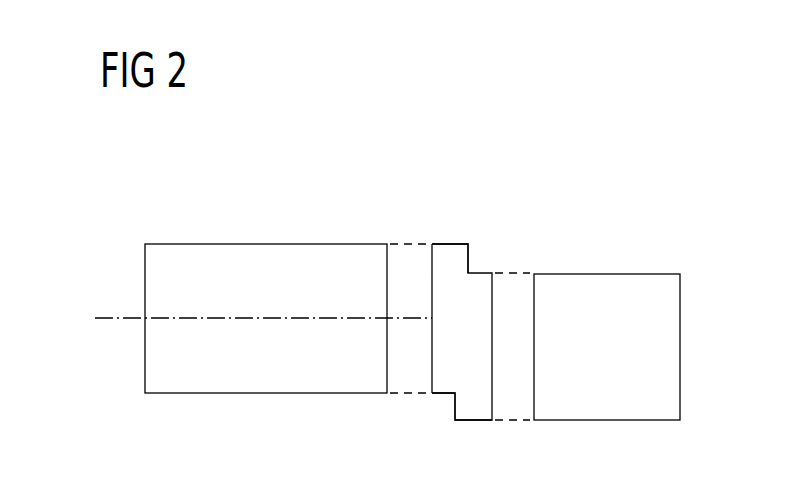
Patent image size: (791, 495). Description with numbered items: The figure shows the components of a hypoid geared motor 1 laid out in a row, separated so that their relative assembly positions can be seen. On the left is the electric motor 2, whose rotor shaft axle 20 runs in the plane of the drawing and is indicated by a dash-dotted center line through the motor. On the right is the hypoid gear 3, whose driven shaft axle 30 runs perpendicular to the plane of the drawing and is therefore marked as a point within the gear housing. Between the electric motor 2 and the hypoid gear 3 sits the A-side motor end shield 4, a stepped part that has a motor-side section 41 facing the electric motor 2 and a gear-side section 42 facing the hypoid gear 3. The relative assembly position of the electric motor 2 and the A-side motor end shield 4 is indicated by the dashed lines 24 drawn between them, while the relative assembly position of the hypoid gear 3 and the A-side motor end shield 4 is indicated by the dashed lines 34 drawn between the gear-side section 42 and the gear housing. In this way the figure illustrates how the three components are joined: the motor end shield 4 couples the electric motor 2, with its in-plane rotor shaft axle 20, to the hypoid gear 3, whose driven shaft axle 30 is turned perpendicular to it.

The hypoid geared motor 1 is at (463, 148).
The electric motor 2 is at (268, 240).
The rotor shaft axle 20 is at (103, 318).
The dashed lines 24 is at (409, 396).
The A-side motor end shield 4 is at (476, 241).
The motor-side section 41 is at (459, 254).
The gear-side section 42 is at (473, 416).
The dashed lines 34 is at (515, 421).
The hypoid gear 3 is at (609, 269).
The driven shaft axle 30 is at (608, 352).